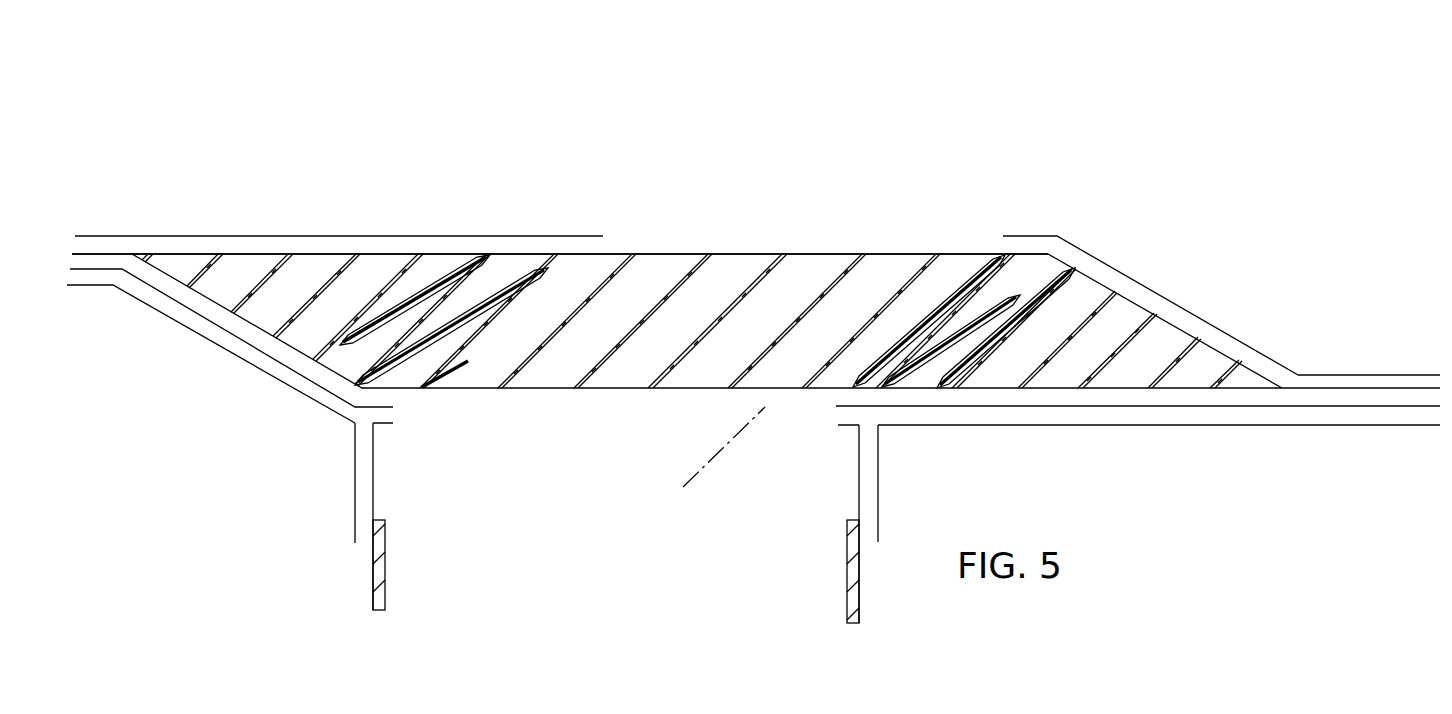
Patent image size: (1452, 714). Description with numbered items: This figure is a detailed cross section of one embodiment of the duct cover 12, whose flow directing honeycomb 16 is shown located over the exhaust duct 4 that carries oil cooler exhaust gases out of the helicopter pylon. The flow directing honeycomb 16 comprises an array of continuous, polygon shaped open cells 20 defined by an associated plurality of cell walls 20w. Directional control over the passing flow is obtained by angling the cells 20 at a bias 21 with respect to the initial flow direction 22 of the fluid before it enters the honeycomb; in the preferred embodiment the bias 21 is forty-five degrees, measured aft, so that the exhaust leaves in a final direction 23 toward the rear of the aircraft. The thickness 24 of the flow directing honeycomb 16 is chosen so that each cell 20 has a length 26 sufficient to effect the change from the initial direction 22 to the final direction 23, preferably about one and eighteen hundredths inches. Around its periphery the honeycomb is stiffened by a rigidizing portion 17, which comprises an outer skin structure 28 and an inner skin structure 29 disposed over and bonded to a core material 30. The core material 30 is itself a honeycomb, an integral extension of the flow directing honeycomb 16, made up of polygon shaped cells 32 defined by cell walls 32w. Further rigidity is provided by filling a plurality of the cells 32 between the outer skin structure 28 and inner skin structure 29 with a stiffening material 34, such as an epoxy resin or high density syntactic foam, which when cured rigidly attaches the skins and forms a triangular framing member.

The exhaust duct 4 is at (859, 557).
The duct cover 12 is at (898, 108).
The flow directing honeycomb 16 is at (715, 240).
The rigidizing portion 17 is at (265, 214).
The open cells 20 is at (890, 273).
The cell walls 20w is at (850, 263).
The bias 21 is at (680, 419).
The initial flow direction 22 is at (679, 389).
The final flow direction 23 is at (847, 220).
The thickness 24 is at (617, 430).
The cell length 26 is at (793, 254).
The outer skin structure 28 is at (331, 236).
The inner skin structure 29 is at (262, 368).
The core material 30 is at (225, 346).
The cells 32 is at (382, 267).
The cell walls 32w is at (345, 267).
The stiffening material 34 is at (505, 273).